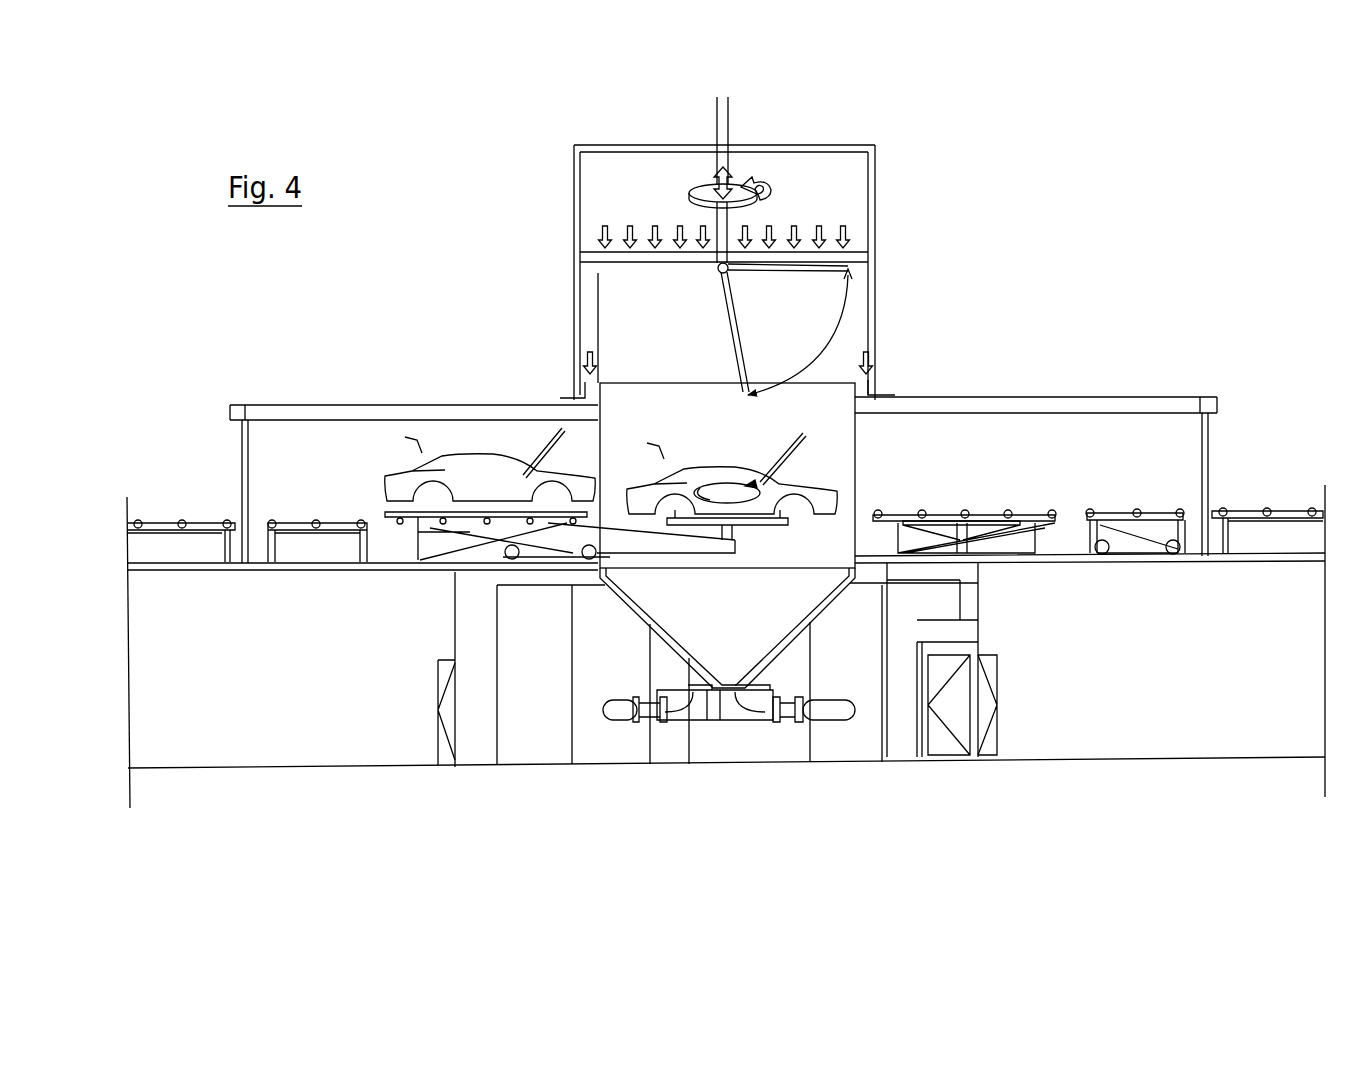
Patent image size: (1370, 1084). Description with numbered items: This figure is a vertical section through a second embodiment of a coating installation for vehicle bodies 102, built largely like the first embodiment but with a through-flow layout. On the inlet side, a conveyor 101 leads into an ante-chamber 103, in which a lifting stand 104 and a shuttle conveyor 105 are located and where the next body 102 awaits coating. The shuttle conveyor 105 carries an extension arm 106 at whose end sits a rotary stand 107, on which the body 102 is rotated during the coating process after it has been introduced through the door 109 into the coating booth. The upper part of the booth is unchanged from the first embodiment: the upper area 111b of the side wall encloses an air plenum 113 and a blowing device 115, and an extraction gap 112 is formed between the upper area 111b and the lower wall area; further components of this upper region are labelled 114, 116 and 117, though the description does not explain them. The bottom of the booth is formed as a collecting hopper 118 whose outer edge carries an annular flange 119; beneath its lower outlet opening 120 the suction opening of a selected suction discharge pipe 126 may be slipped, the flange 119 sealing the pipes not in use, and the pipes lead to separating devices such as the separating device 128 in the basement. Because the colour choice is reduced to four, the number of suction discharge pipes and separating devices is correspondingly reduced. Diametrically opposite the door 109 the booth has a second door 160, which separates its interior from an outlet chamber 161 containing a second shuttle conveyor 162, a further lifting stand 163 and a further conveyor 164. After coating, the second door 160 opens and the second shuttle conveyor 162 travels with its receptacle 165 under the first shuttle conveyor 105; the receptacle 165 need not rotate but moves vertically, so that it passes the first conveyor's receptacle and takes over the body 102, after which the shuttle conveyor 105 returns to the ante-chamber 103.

The conveyor 101 is at (172, 518).
The body 102 is at (485, 468).
The ante-chamber 103 is at (292, 473).
The lifting stand 104 is at (460, 535).
The shuttle conveyor 105 is at (565, 538).
The extension arm 106 is at (683, 548).
The rotary stand 107 is at (675, 518).
The door 109 is at (598, 305).
The upper area of side wall 111b is at (875, 172).
The extraction gap 112 is at (865, 388).
The air plenum 113 is at (627, 207).
The filter ceiling 114 is at (657, 258).
The blowing device 115 is at (713, 177).
The supply pipe 116 is at (728, 120).
The pivot arm 117 is at (778, 266).
The collecting hopper 118 is at (792, 642).
The annular flange 119 is at (758, 688).
The outlet opening 120 is at (730, 690).
The suction discharge pipe 126 is at (677, 721).
The separating device 128 is at (753, 721).
The second door 160 is at (857, 455).
The outlet chamber 161 is at (1060, 458).
The second shuttle conveyor 162 is at (1058, 542).
The further lifting stand 163 is at (905, 512).
The further conveyor 164 is at (1145, 510).
The receptacle 165 is at (1040, 512).